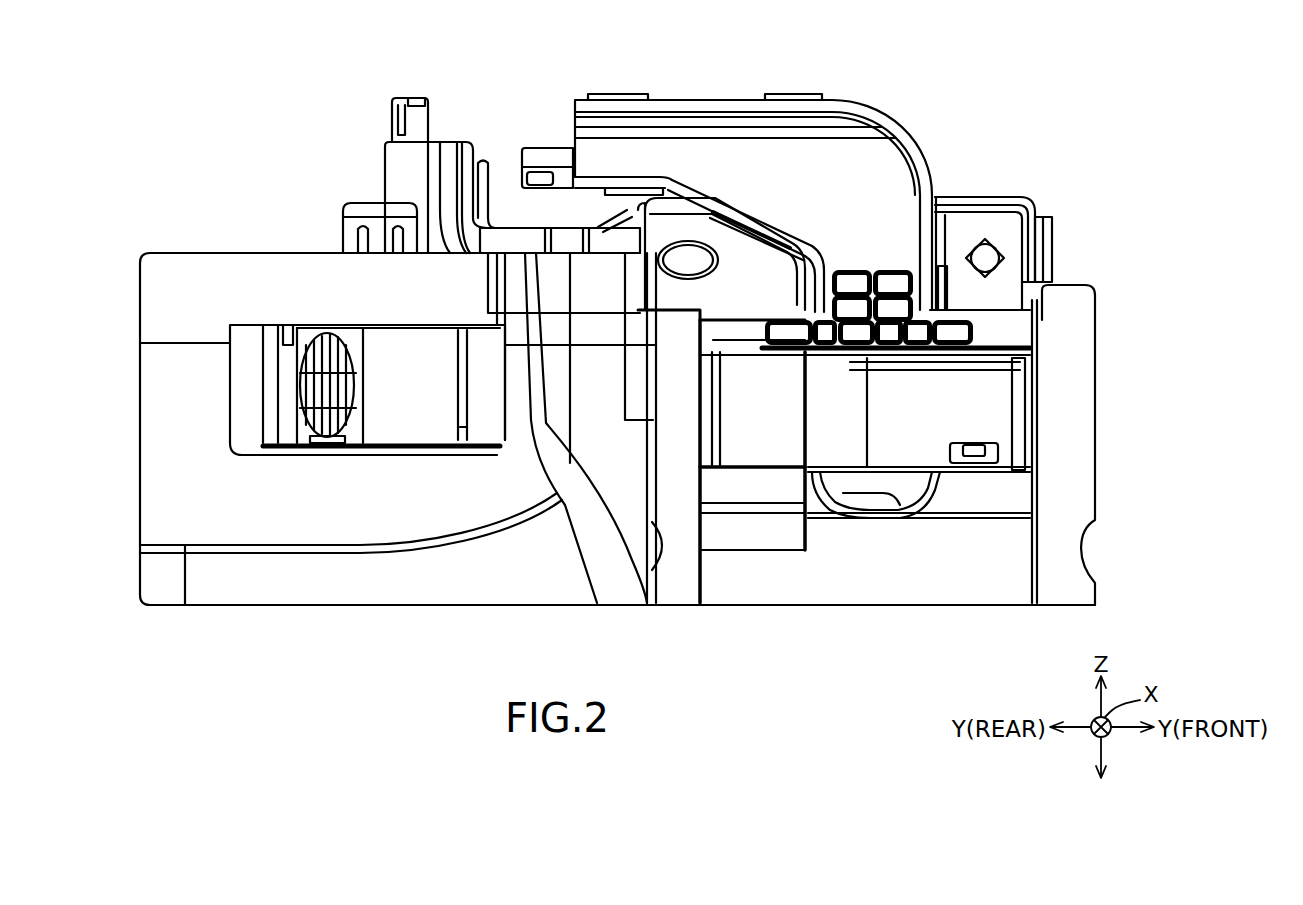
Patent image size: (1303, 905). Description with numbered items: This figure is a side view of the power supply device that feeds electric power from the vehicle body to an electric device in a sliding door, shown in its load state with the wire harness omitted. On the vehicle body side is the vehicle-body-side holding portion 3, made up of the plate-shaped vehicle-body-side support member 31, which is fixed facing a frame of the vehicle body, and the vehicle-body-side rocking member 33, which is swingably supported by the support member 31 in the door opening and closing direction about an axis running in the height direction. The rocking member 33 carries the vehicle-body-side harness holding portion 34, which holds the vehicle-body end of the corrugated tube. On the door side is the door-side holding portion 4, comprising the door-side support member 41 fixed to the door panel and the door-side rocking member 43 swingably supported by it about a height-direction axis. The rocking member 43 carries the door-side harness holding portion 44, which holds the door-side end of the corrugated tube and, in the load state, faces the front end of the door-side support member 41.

The vehicle-body-side holding portion 3 is at (414, 86).
The door-side holding portion 4 is at (1038, 193).
The door-side support member 41 is at (1070, 305).
The vehicle-body-side support member 31 is at (367, 578).
The vehicle-body-side rocking member 33 is at (393, 417).
The vehicle-body-side harness holding portion 34 is at (297, 392).
The door-side rocking member 43 is at (900, 428).
The door-side harness holding portion 44 is at (1035, 423).